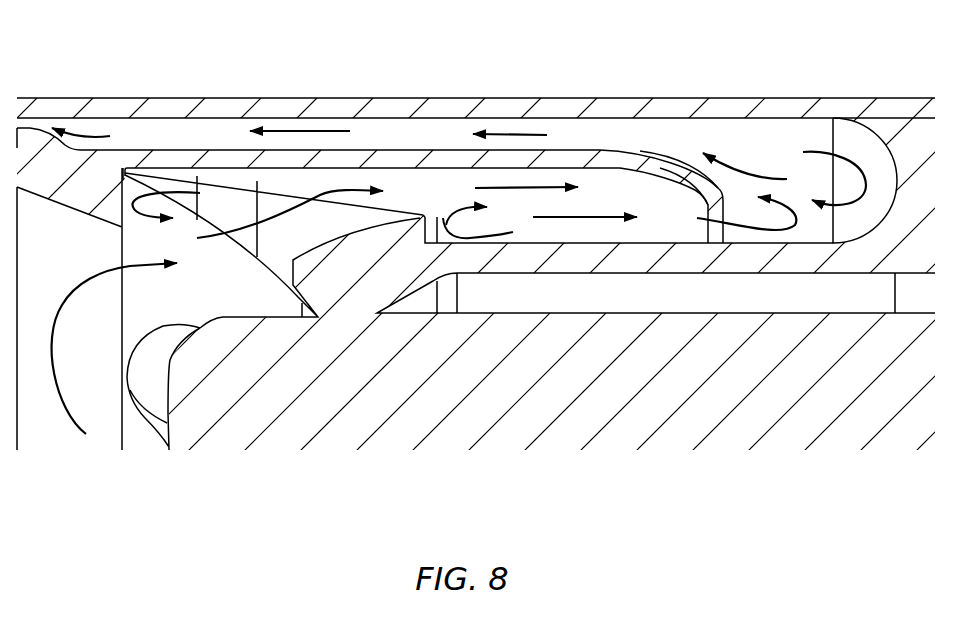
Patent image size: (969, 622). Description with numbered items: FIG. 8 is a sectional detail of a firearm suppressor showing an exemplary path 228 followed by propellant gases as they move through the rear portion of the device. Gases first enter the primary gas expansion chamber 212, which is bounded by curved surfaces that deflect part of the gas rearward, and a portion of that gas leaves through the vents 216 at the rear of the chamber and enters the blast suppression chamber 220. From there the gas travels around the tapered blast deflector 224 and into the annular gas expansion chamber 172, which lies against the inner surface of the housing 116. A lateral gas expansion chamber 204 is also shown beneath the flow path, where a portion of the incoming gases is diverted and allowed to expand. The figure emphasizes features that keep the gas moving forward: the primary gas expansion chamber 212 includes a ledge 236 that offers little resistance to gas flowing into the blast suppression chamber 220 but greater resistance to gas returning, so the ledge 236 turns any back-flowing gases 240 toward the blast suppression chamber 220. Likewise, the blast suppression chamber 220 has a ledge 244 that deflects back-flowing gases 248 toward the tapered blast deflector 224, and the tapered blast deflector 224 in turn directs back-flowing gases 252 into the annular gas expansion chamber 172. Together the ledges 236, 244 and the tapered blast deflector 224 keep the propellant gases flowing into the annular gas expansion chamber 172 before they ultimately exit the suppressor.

The housing 116 is at (566, 98).
The annular gas expansion chamber 172 is at (620, 138).
The lateral gas expansion chamber 204 is at (656, 293).
The primary gas expansion chamber 212 is at (108, 309).
The vents 216 is at (278, 250).
The blast suppression chamber 220 is at (410, 187).
The tapered blast deflector 224 is at (687, 168).
The exemplary path 228 is at (97, 136).
The ledge 236 is at (158, 190).
The back-flowing gases 240 is at (137, 172).
The ledge 244 is at (428, 222).
The back-flowing gases 248 is at (508, 230).
The back-flowing gases 252 is at (840, 158).